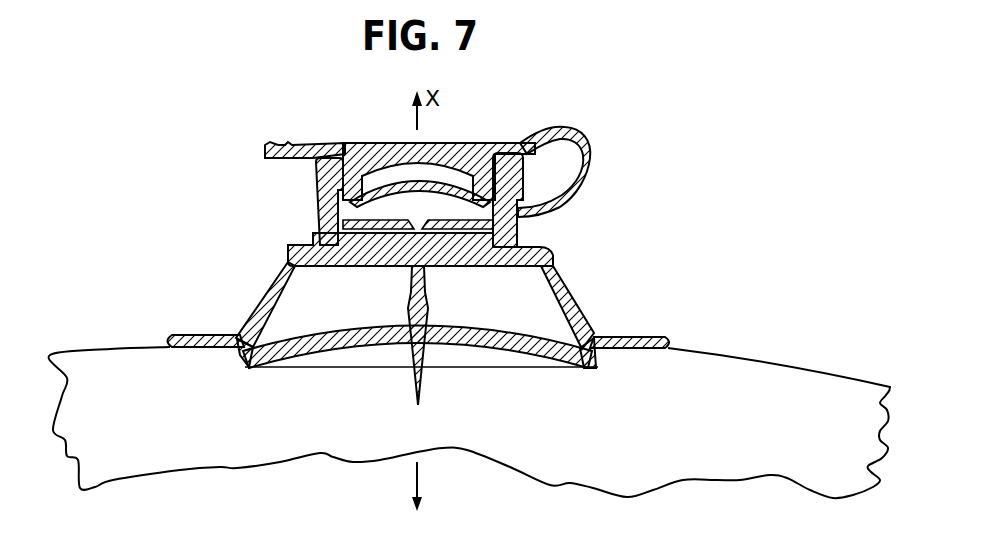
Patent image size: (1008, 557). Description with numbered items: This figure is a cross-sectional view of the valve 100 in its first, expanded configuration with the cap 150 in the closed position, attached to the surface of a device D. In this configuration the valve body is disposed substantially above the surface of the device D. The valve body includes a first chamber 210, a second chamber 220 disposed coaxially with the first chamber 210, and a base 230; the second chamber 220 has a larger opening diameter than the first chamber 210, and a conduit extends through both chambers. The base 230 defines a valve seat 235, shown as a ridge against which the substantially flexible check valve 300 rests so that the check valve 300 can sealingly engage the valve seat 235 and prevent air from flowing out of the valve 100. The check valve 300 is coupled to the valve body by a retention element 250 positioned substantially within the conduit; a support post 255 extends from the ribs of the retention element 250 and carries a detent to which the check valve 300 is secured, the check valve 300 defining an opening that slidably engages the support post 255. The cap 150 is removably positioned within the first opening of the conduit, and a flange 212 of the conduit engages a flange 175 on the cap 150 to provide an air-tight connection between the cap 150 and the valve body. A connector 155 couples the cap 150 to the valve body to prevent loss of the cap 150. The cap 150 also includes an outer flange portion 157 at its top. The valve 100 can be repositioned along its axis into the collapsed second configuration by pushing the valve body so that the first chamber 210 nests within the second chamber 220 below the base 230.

The valve 100 is at (157, 158).
The cap 150 is at (483, 158).
The connector 155 is at (597, 150).
The cap flange 157 is at (276, 147).
The flange 175 is at (300, 240).
The first chamber 210 is at (522, 238).
The flange 212 is at (318, 182).
The second chamber 220 is at (566, 290).
The base 230 is at (661, 337).
The valve seat 235 is at (236, 352).
The retention element 250 is at (474, 380).
The support post 255 is at (408, 372).
The check valve 300 is at (580, 360).
The device D is at (805, 390).